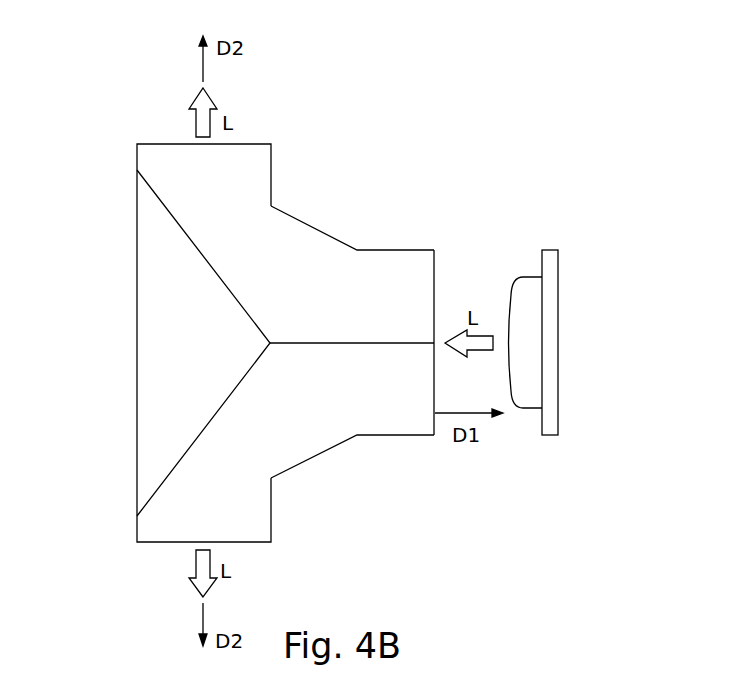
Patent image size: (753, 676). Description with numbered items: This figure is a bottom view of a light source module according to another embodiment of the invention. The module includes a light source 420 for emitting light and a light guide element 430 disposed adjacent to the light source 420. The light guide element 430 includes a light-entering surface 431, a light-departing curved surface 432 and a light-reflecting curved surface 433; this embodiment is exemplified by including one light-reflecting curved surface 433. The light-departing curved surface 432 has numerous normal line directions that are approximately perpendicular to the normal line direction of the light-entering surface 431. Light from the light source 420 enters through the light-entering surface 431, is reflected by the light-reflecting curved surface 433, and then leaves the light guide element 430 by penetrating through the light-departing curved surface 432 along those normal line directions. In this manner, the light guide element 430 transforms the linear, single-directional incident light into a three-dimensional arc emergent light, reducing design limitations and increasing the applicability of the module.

The light source 420 is at (552, 318).
The light guide element 430 is at (315, 223).
The light-entering surface 431 is at (434, 272).
The light-departing curved surface 432 is at (252, 144).
The light-reflecting curved surface 433 is at (193, 246).